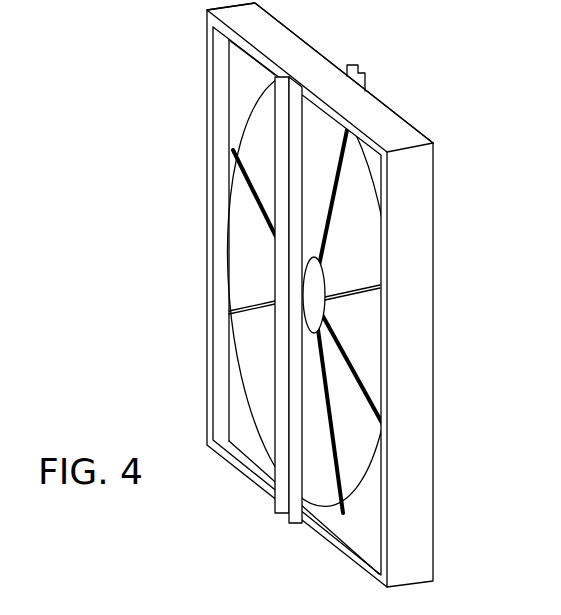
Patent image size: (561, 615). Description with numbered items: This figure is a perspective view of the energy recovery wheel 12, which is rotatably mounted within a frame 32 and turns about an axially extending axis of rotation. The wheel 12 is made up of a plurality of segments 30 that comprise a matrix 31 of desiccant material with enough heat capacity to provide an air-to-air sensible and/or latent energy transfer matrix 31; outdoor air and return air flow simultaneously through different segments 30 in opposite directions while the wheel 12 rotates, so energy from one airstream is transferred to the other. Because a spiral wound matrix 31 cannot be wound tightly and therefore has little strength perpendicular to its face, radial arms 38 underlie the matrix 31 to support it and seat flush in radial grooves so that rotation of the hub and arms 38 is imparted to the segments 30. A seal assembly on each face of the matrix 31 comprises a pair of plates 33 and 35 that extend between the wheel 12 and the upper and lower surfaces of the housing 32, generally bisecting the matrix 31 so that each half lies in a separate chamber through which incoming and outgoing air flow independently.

The energy recovery wheel 12 is at (376, 170).
The segment 30 is at (372, 321).
The matrix 31 is at (363, 343).
The frame 32 is at (410, 125).
The seal plate 33 is at (275, 89).
The seal plate 35 is at (366, 82).
The radial arm 38 is at (253, 194).